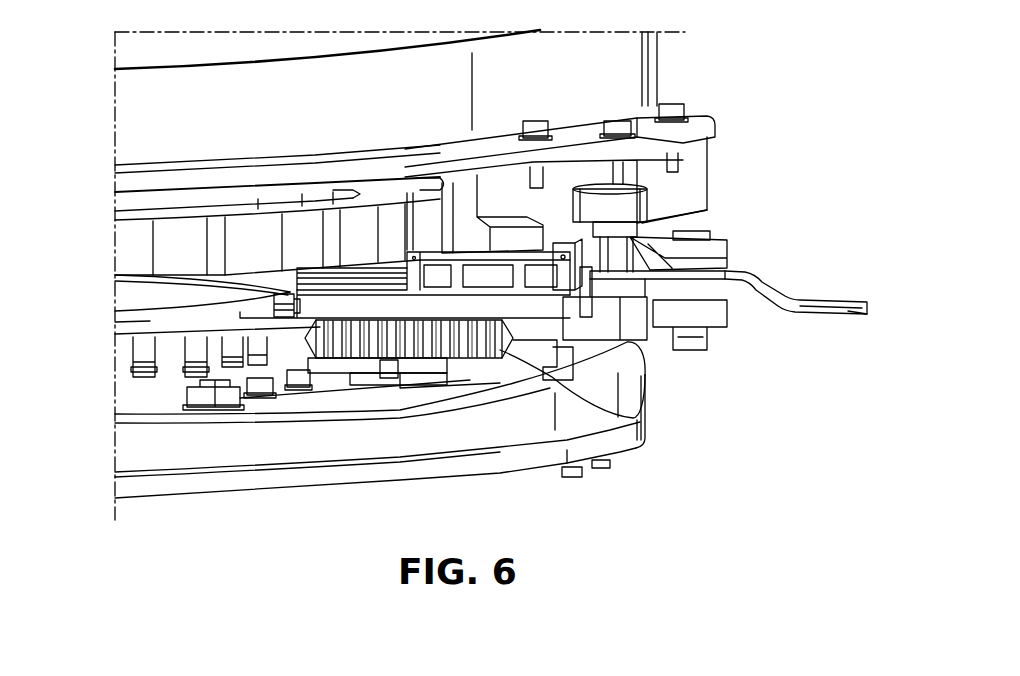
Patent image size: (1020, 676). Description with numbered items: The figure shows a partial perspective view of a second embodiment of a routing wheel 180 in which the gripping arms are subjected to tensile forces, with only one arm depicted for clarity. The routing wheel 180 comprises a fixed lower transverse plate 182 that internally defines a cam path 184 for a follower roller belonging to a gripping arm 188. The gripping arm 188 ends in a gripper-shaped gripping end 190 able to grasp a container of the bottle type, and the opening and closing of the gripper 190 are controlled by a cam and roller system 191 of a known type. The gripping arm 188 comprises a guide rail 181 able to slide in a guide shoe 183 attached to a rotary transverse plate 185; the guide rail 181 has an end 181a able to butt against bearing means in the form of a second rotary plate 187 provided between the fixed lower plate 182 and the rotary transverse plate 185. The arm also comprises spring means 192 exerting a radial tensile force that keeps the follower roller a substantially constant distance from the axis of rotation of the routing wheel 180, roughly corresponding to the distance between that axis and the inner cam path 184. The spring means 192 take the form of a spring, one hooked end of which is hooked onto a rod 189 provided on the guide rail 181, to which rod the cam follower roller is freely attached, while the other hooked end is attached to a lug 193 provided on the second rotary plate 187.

The routing wheel 180 is at (678, 97).
The guide rail 181 is at (516, 310).
The end of guide rail 181a is at (316, 289).
The fixed lower transverse plate 182 is at (237, 443).
The guide shoe 183 is at (553, 243).
The cam path 184 is at (468, 397).
The rotary transverse plate 185 is at (177, 242).
The second rotary plate 187 is at (153, 320).
The gripping arm 188 is at (330, 311).
The rod 189 is at (567, 350).
The gripper-shaped gripping end 190 is at (745, 273).
The cam and roller system 191 is at (632, 196).
The spring means 192 is at (397, 347).
The lug 193 is at (236, 350).